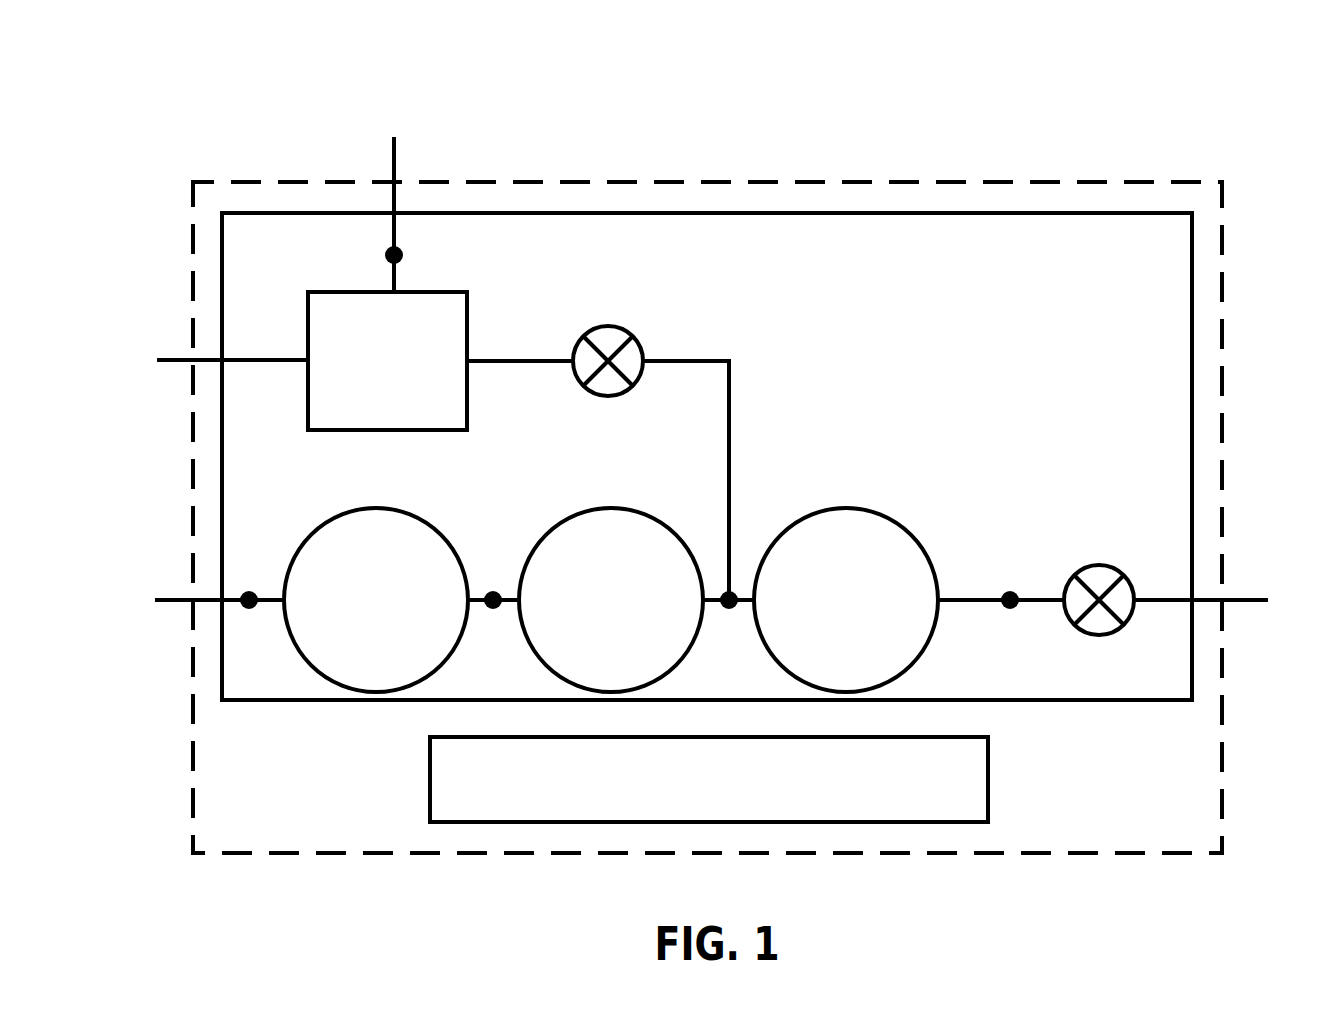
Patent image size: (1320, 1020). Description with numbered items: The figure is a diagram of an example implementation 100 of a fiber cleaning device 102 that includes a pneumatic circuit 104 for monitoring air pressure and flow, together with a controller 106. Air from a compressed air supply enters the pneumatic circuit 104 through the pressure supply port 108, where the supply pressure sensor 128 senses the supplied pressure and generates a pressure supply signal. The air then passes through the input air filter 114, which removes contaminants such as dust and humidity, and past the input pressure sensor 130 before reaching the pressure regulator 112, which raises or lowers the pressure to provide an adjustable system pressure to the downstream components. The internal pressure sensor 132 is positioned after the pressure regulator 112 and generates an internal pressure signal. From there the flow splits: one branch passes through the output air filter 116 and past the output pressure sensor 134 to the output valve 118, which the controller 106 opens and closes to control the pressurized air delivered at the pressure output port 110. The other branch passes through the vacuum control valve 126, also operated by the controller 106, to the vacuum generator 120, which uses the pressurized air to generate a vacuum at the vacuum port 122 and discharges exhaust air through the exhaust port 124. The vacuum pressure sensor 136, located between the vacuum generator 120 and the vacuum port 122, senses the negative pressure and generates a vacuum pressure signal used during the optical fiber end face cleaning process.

The example implementation 100 is at (213, 69).
The fiber cleaning device 102 is at (1163, 180).
The pneumatic circuit 104 is at (1045, 211).
The controller 106 is at (689, 790).
The pressure supply port 108 is at (155, 600).
The pressure output port 110 is at (1265, 600).
The pressure regulator 112 is at (591, 611).
The input air filter 114 is at (356, 611).
The output air filter 116 is at (826, 611).
The output valve 118 is at (1100, 565).
The vacuum generator 120 is at (367, 372).
The vacuum port 122 is at (394, 137).
The exhaust port 124 is at (157, 360).
The vacuum control valve 126 is at (608, 326).
The supply pressure sensor 128 is at (249, 591).
The input pressure sensor 130 is at (494, 591).
The internal pressure sensor 132 is at (729, 610).
The output pressure sensor 134 is at (1009, 591).
The vacuum pressure sensor 136 is at (404, 255).